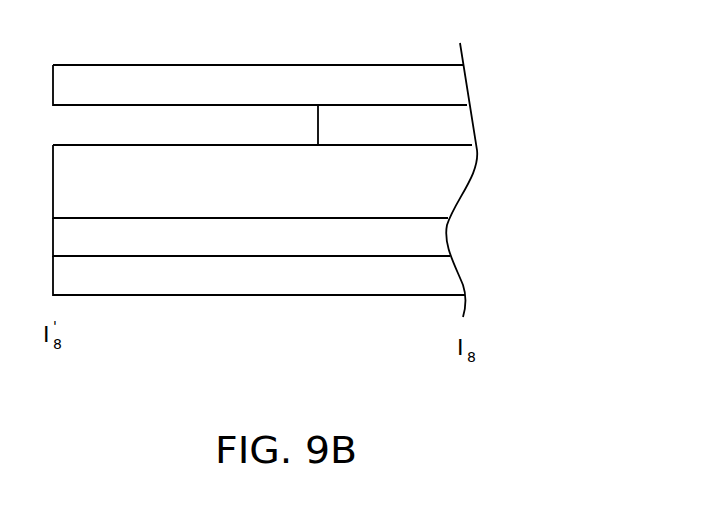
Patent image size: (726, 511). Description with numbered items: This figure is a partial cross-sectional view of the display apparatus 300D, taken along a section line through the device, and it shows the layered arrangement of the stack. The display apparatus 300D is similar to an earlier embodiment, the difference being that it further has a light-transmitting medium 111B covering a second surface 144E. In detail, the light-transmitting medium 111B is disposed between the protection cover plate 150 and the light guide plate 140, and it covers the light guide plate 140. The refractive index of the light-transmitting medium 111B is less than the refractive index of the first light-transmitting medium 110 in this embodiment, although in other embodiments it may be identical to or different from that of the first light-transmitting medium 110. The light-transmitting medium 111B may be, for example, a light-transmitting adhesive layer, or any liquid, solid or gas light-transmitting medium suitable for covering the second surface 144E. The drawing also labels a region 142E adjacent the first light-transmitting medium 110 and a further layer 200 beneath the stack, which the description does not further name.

The display apparatus 300D is at (578, 413).
The protection cover plate 150 is at (448, 88).
The first light-transmitting medium 110 is at (448, 126).
The recess / edge region 142E is at (363, 145).
The light guide plate 140 is at (448, 188).
The light-transmitting medium 111B is at (430, 234).
The bottom layer 200 is at (435, 275).
The second surface 144E is at (242, 217).